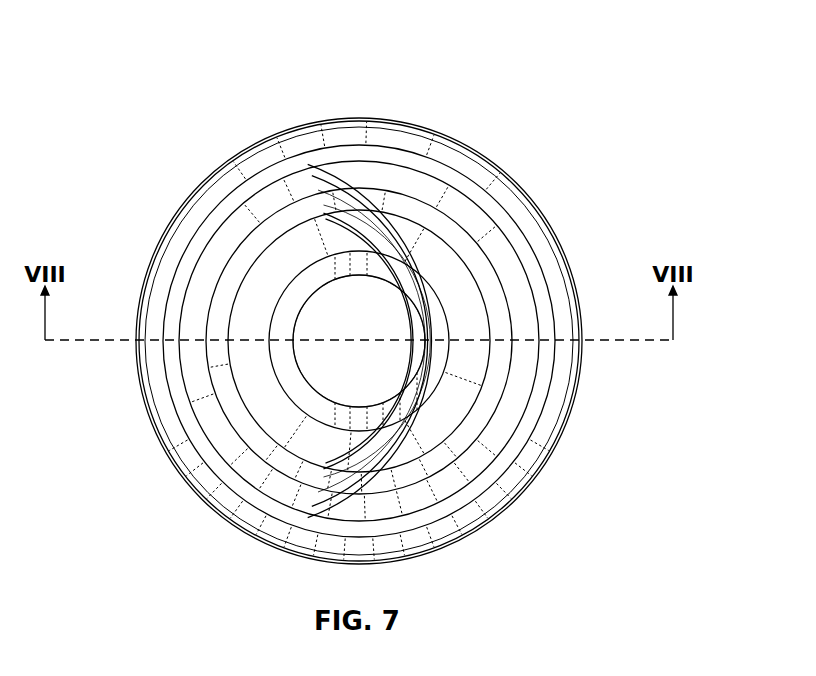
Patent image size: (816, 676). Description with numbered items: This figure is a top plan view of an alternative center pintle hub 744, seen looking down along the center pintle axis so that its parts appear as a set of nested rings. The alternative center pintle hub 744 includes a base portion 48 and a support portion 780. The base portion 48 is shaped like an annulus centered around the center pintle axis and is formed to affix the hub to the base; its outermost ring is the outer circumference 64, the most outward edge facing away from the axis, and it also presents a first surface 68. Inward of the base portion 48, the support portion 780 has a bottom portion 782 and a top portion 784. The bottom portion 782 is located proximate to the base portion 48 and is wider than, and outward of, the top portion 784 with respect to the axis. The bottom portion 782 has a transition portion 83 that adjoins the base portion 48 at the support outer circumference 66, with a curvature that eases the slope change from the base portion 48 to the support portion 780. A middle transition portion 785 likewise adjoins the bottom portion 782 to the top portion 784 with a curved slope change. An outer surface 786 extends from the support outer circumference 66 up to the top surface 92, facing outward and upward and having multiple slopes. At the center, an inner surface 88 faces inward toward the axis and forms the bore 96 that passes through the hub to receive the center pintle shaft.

The alternative center pintle hub 744 is at (121, 44).
The base portion 48 is at (174, 263).
The outer circumference 64 is at (178, 210).
The first surface 68 is at (232, 172).
The support outer circumference 66 is at (337, 150).
The transition portion 83 is at (362, 150).
The bottom portion 782 is at (397, 178).
The outer surface 786 is at (480, 155).
The middle transition portion 785 is at (428, 222).
The top portion 784 is at (460, 278).
The top surface 92 is at (442, 334).
The bore 96 is at (350, 302).
The inner surface 88 is at (300, 378).
The support portion 780 is at (483, 426).